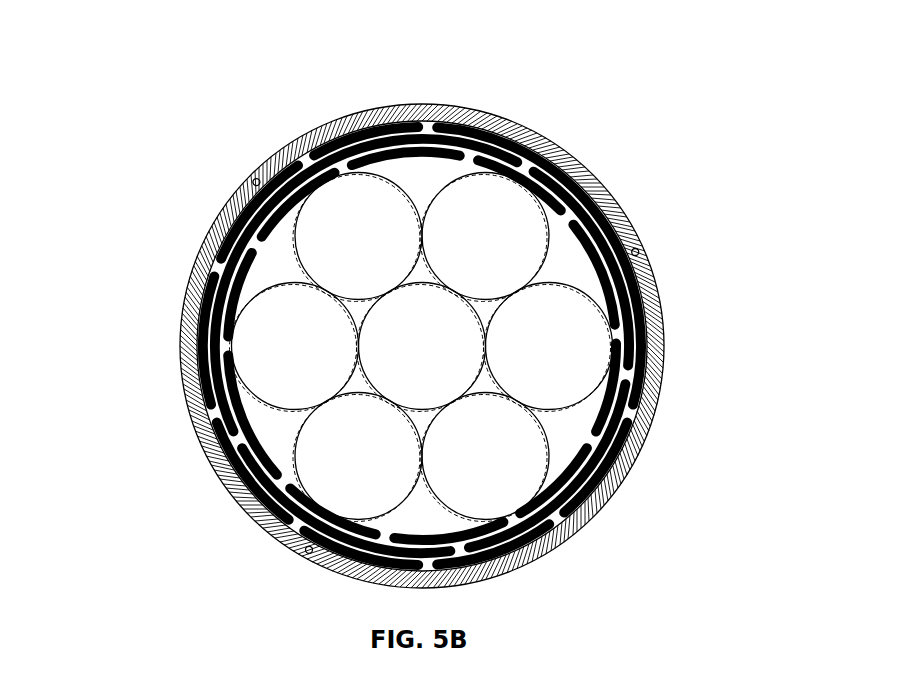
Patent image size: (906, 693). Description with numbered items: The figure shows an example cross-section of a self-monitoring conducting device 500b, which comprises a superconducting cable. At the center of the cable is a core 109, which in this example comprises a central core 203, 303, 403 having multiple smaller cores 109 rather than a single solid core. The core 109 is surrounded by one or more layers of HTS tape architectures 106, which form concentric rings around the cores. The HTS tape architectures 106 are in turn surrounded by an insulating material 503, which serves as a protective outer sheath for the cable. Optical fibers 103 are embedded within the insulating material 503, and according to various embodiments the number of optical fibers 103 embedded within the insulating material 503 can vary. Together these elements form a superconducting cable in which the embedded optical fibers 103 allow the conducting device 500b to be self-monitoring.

The self-monitoring conducting device 500b is at (152, 134).
The insulating material 503 is at (190, 286).
The optical fibers 103 is at (255, 180).
The central core 203 is at (411, 166).
The central core 303 is at (351, 346).
The central core 403 is at (351, 346).
The HTS tape architectures 106 is at (214, 412).
The core 109 is at (592, 368).